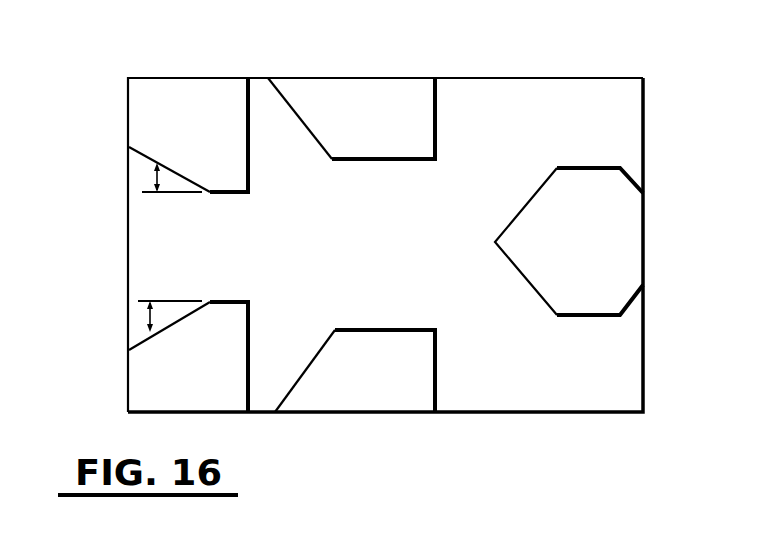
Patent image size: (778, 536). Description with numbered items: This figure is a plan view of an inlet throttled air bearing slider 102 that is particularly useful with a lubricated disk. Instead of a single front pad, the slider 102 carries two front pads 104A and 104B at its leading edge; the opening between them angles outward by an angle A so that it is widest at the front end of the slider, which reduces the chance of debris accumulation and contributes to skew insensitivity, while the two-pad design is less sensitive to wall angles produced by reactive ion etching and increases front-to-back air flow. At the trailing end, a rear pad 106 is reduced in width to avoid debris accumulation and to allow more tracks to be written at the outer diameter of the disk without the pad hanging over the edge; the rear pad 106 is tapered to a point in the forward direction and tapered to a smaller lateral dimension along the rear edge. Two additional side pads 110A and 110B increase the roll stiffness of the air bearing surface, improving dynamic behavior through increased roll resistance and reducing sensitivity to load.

The slider 102 is at (475, 77).
The front pad 104A is at (212, 193).
The front pad 104B is at (210, 302).
The rear pad 106 is at (603, 167).
The side pad 110A is at (368, 160).
The side pad 110B is at (372, 330).